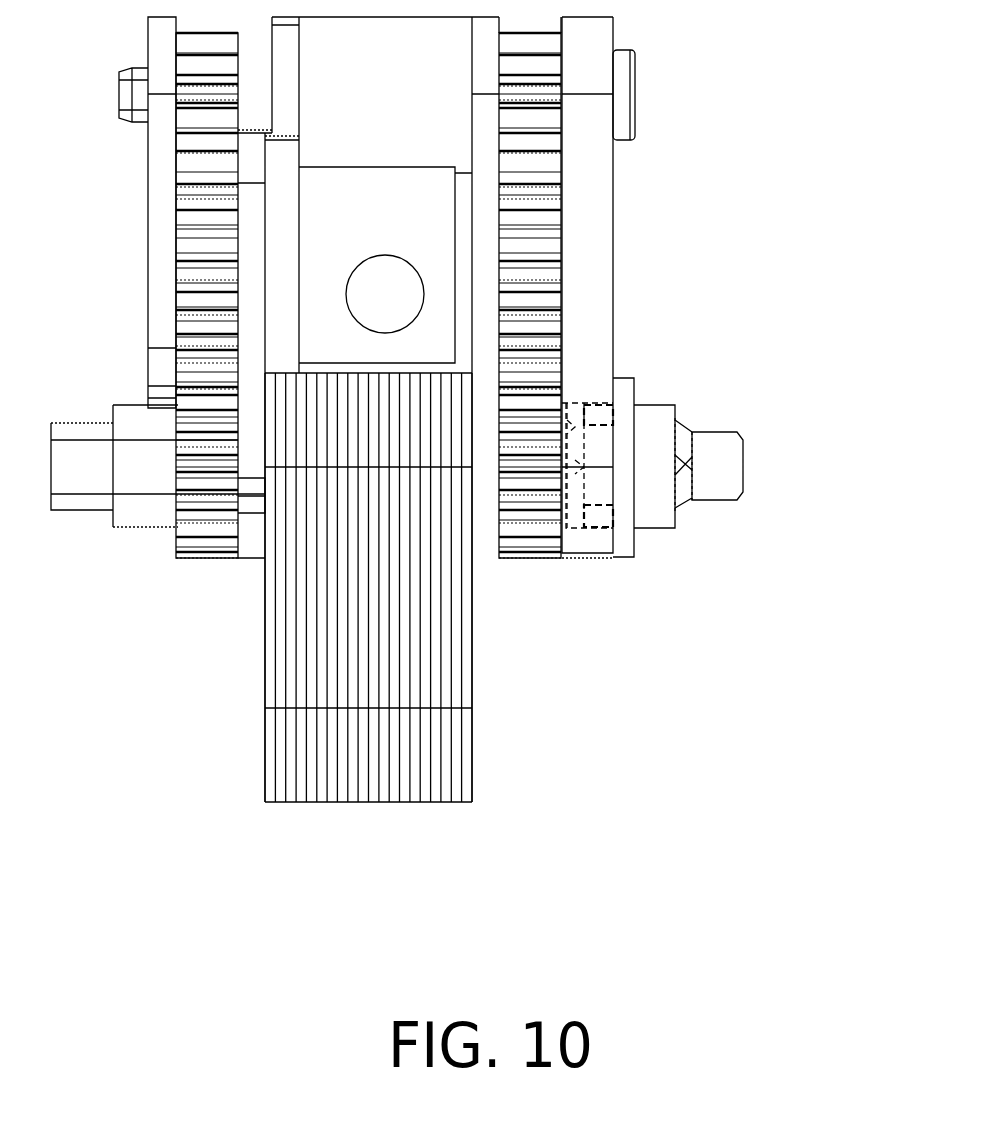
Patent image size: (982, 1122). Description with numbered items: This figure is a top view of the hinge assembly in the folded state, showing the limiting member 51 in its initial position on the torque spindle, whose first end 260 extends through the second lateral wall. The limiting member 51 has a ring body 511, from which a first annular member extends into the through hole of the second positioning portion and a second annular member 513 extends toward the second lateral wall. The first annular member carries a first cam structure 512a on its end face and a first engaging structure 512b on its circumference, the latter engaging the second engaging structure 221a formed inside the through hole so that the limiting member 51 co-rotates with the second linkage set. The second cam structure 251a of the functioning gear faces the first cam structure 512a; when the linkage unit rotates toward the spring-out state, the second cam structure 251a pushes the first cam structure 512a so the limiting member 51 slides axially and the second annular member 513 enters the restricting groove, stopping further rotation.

The limiting member 51 is at (677, 479).
The ring body 511 is at (615, 377).
The first cam structure 512a is at (578, 528).
The first engaging structure 512b is at (614, 416).
The second annular member 513 is at (665, 405).
The first end 260 is at (712, 458).
The second engaging structure 221a is at (592, 403).
The second cam structure 251a is at (569, 528).